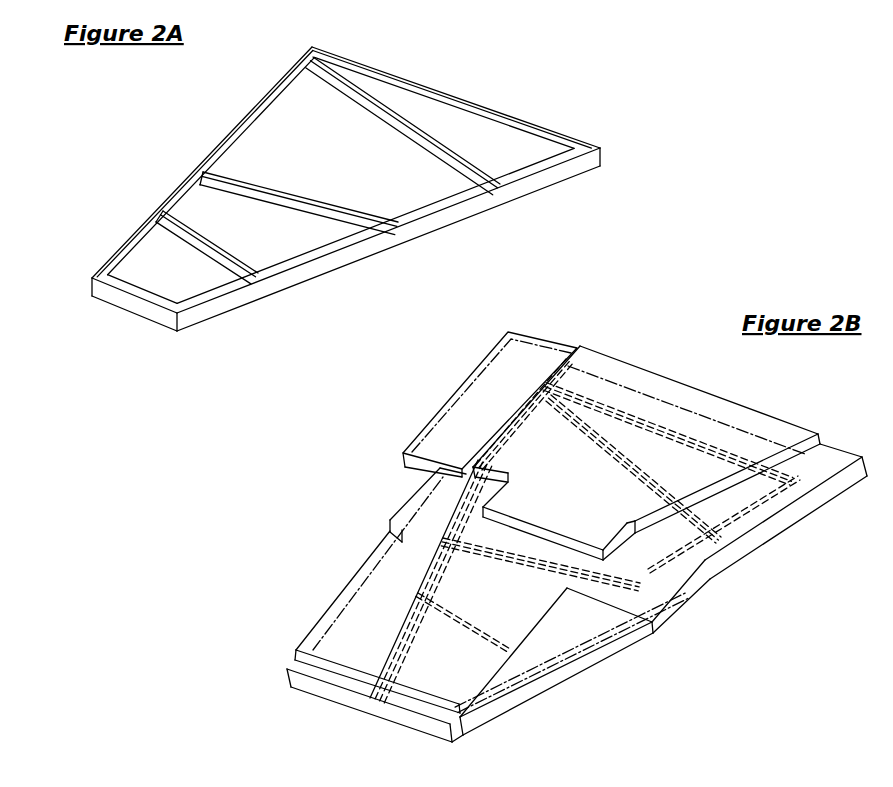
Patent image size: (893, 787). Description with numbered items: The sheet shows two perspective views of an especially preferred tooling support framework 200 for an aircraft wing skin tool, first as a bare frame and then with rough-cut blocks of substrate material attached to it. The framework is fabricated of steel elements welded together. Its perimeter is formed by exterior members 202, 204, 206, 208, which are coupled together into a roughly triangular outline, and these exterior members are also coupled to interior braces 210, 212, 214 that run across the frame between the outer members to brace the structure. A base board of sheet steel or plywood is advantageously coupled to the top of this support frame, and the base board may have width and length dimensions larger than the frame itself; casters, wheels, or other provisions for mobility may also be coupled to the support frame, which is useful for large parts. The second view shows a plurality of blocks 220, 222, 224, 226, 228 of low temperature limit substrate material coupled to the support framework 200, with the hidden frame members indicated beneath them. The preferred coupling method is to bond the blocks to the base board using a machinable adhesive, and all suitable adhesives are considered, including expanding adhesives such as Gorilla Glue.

In FIG. 2A, the tooling support framework 200 is at (545, 90).
In FIG. 2B, the tooling support framework 200 is at (597, 634).
In FIG. 2A, the exterior member 202 is at (126, 245).
In FIG. 2B, the exterior member 202 is at (382, 653).
In FIG. 2A, the exterior member 204 is at (403, 78).
In FIG. 2A, the exterior member 206 is at (572, 200).
In FIG. 2A, the exterior member 208 is at (140, 320).
In FIG. 2A, the interior brace 210 is at (198, 252).
In FIG. 2A, the interior brace 212 is at (272, 205).
In FIG. 2A, the interior brace 214 is at (348, 112).
In FIG. 2B, the block of substrate material 220 is at (334, 700).
In FIG. 2B, the block of substrate material 222 is at (400, 516).
In FIG. 2B, the block of substrate material 224 is at (431, 420).
In FIG. 2B, the block of substrate material 226 is at (768, 412).
In FIG. 2B, the block of substrate material 228 is at (563, 678).